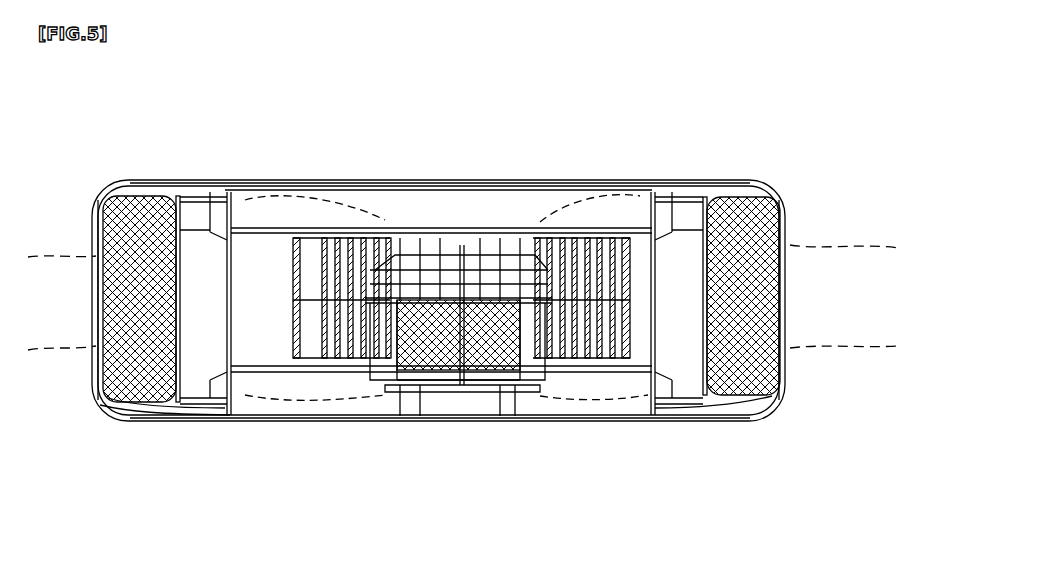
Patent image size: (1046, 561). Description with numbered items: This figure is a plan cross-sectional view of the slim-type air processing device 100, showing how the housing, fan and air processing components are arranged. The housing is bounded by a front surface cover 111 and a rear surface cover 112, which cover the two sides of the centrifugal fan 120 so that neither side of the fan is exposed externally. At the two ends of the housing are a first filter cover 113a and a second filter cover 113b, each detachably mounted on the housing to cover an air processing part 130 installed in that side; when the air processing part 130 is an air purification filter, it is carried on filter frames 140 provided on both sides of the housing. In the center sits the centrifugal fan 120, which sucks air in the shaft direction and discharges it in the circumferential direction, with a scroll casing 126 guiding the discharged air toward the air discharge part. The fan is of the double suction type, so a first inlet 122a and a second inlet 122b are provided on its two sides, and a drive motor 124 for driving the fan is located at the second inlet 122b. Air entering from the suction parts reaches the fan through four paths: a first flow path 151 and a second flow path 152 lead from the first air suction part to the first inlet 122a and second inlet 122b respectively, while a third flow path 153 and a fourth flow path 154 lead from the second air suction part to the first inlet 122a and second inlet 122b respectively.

The slim-type air processing device 100 is at (456, 89).
The front surface cover 111 is at (440, 181).
The rear surface cover 112 is at (364, 420).
The first filter cover 113a is at (786, 205).
The second filter cover 113b is at (104, 406).
The centrifugal fan 120 is at (466, 400).
The first inlet 122a is at (458, 236).
The second inlet 122b is at (540, 378).
The drive motor 124 is at (498, 382).
The scroll casing 126 is at (270, 195).
The air processing part 130 is at (152, 420).
The filter frame 140 is at (165, 184).
The first flow path 151 is at (642, 190).
The second flow path 152 is at (640, 396).
The third flow path 153 is at (228, 190).
The fourth flow path 154 is at (234, 420).